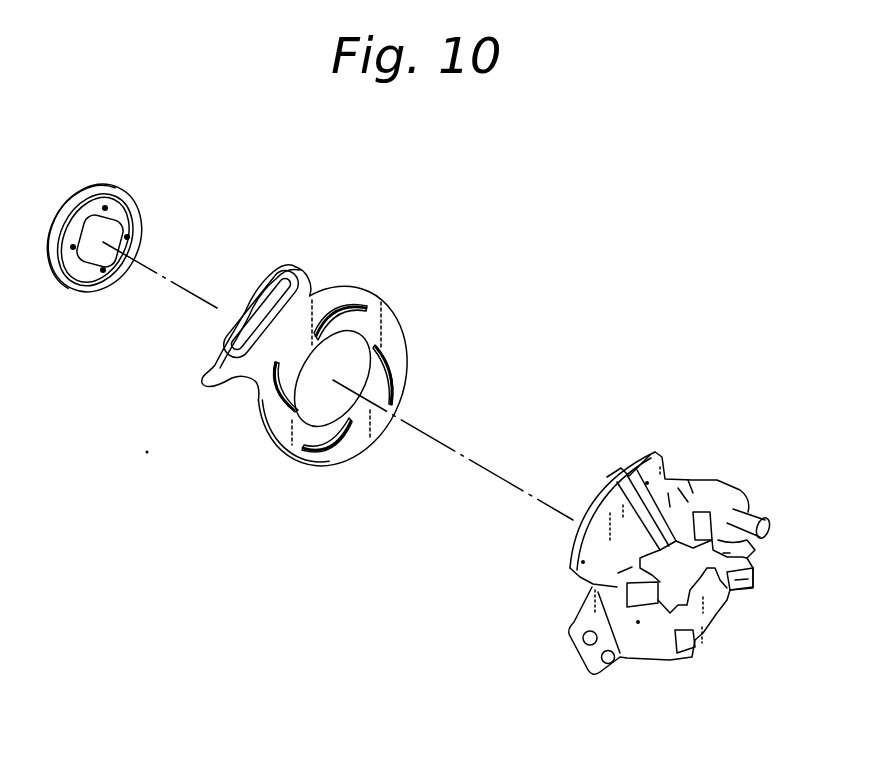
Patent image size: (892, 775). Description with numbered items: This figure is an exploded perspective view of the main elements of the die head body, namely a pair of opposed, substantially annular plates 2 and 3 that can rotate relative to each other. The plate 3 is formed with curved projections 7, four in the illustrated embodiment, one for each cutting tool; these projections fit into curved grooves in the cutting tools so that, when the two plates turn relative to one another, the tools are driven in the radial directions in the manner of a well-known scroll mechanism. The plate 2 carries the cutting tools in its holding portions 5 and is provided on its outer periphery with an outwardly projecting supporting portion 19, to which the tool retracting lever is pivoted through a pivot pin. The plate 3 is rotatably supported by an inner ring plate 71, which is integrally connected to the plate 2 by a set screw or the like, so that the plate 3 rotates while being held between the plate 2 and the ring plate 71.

The plate 2 is at (672, 581).
The plate 3 is at (390, 323).
The holding portions 5 is at (697, 642).
The curved projections 7 is at (398, 378).
The supporting portion 19 is at (600, 512).
The inner ring plate 71 is at (68, 280).